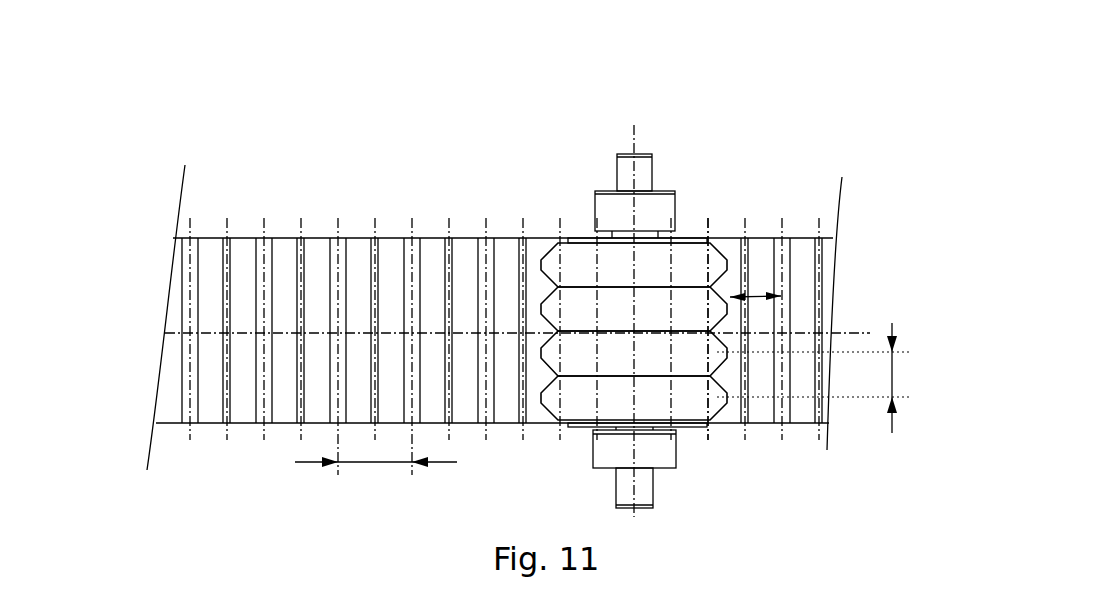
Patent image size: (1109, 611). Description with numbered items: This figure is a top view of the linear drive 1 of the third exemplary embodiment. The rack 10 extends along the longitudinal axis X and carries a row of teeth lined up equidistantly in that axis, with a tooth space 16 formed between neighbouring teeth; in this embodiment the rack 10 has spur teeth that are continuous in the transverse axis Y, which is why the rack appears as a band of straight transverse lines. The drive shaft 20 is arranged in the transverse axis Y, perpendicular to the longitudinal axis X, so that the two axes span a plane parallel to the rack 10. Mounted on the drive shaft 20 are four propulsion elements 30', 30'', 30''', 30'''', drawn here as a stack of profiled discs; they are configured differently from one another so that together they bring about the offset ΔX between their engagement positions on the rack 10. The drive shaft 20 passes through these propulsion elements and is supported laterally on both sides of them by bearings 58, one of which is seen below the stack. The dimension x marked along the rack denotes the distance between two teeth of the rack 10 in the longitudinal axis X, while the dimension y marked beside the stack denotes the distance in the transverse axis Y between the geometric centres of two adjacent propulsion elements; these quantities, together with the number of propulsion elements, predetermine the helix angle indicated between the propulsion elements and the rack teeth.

The conveyor device 1 is at (234, 131).
The rack 10 is at (135, 322).
The tooth space 16 is at (713, 263).
The drive shaft 20 is at (625, 167).
The propulsion element 30' is at (634, 204).
The propulsion element 30'' is at (612, 221).
The propulsion element 30''' is at (627, 409).
The propulsion element 30'''' is at (674, 444).
The bearing 58 is at (642, 450).
The longitudinal axis X is at (242, 335).
The transverse axis Y is at (637, 172).
The distance between two teeth x is at (372, 463).
The distance between propulsion elements y is at (893, 366).